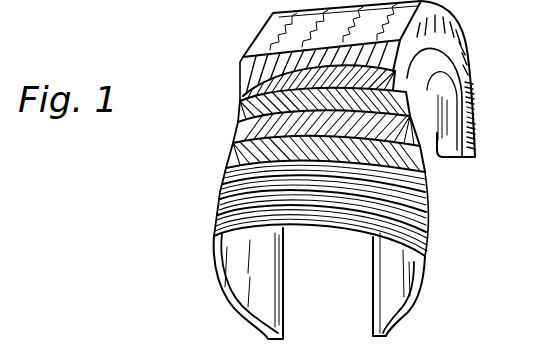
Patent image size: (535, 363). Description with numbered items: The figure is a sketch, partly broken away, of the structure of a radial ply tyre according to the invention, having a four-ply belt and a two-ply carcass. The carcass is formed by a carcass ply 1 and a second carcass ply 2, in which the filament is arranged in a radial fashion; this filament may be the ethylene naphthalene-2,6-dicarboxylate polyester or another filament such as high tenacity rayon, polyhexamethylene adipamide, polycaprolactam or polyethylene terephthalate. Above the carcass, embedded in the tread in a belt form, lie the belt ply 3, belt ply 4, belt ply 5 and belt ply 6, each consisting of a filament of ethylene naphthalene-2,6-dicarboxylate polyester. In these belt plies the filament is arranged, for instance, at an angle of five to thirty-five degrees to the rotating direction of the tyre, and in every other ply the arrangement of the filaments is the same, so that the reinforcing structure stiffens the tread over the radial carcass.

The carcass ply 1 is at (213, 243).
The carcass ply 2 is at (216, 207).
The belt ply 3 is at (226, 163).
The belt ply 4 is at (243, 143).
The belt ply 5 is at (240, 117).
The belt ply 6 is at (243, 92).